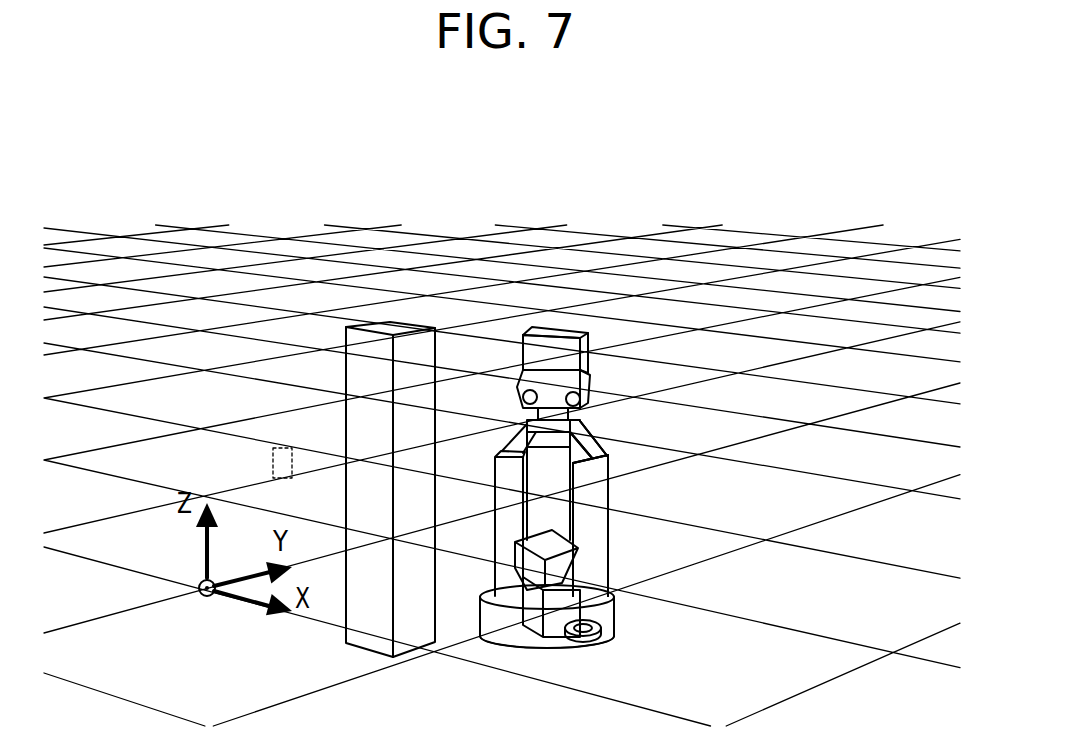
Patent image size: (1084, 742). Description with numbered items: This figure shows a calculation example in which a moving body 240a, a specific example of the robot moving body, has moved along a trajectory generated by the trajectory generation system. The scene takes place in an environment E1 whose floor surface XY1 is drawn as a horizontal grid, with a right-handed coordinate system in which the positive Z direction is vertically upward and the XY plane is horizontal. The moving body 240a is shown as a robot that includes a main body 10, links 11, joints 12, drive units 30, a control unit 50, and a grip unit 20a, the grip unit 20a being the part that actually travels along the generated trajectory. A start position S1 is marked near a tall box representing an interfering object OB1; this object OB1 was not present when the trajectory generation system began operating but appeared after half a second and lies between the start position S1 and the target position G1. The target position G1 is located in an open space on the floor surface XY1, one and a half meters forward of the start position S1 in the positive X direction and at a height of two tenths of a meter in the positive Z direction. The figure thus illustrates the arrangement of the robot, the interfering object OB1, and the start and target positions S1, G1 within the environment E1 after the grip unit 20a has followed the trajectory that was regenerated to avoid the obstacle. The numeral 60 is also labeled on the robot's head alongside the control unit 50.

The environment E1 is at (929, 127).
The floor surface XY1 is at (867, 572).
The moving body 240a is at (622, 305).
The interfering object OB1 is at (405, 323).
The start position S1 is at (317, 446).
The control unit 50 is at (594, 343).
The sensor 60 is at (551, 352).
The main body 10 is at (605, 450).
The joints 12 is at (589, 508).
The drive units 30 is at (594, 415).
The links 11 is at (607, 587).
The target position G1 is at (612, 610).
The grip unit 20a is at (603, 625).